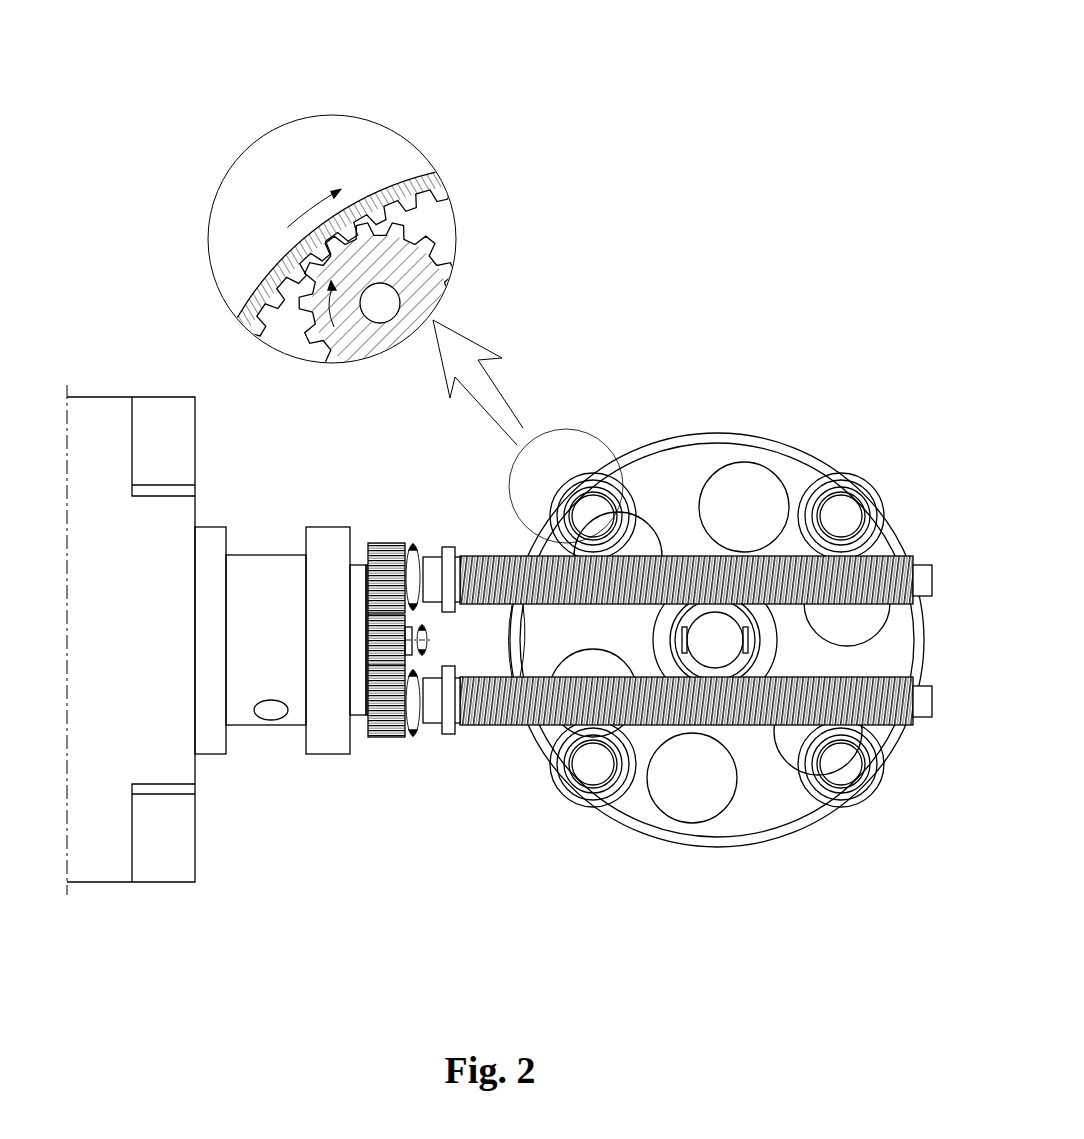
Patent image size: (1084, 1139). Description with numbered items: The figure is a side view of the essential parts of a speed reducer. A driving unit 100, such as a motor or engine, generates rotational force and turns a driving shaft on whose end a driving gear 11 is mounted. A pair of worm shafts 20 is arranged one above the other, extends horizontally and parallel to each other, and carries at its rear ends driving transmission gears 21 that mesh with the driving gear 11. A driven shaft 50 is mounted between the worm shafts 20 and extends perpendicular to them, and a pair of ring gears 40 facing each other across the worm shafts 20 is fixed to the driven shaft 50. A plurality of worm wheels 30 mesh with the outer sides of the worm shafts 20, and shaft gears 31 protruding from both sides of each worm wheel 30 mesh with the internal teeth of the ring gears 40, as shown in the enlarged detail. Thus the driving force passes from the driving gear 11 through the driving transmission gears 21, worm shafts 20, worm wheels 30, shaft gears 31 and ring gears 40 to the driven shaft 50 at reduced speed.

The driving unit 100 is at (104, 415).
The driving gear 11 is at (378, 641).
The worm shafts 20 is at (483, 727).
The driving transmission gears 21 is at (382, 730).
The worm wheels 30 is at (588, 592).
The shaft gears 31 is at (432, 250).
The ring gears 40 is at (387, 190).
The driven shaft 50 is at (714, 638).